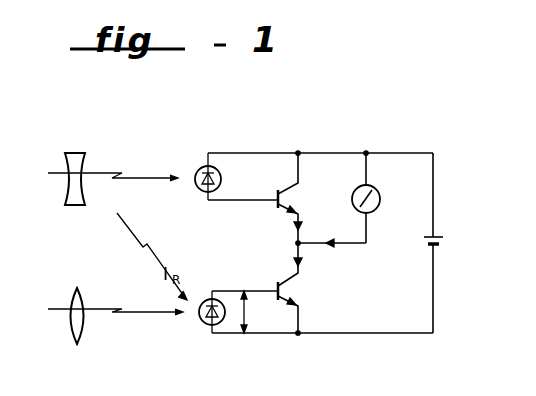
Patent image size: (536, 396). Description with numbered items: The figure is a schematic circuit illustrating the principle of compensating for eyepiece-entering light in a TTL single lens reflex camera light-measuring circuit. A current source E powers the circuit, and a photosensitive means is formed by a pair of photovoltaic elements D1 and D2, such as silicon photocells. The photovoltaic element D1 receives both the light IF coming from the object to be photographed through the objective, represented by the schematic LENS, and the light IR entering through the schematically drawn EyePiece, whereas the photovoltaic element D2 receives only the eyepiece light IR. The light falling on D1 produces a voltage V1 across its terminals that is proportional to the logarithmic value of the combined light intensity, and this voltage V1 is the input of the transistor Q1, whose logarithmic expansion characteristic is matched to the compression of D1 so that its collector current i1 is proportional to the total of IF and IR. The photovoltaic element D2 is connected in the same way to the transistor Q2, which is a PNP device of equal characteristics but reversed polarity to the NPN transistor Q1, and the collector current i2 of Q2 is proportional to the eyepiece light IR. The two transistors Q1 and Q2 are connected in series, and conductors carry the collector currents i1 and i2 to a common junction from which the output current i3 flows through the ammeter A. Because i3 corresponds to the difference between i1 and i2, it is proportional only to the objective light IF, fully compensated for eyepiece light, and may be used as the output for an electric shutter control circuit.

The photovoltaic element D1 is at (208, 300).
The photovoltaic element D2 is at (203, 169).
The transistor Q1 is at (305, 288).
The transistor Q2 is at (300, 198).
The ammeter A is at (372, 212).
The current source E is at (440, 245).
The voltage V1 is at (249, 312).
The eyepiece-entering light IR is at (113, 169).
The light input component from the objective IF is at (115, 303).
The collector current i1 is at (296, 268).
The collector current i2 is at (296, 224).
The output current i3 is at (323, 251).
The eyepiece EyePiece is at (82, 166).
The objective lens LENS is at (73, 307).